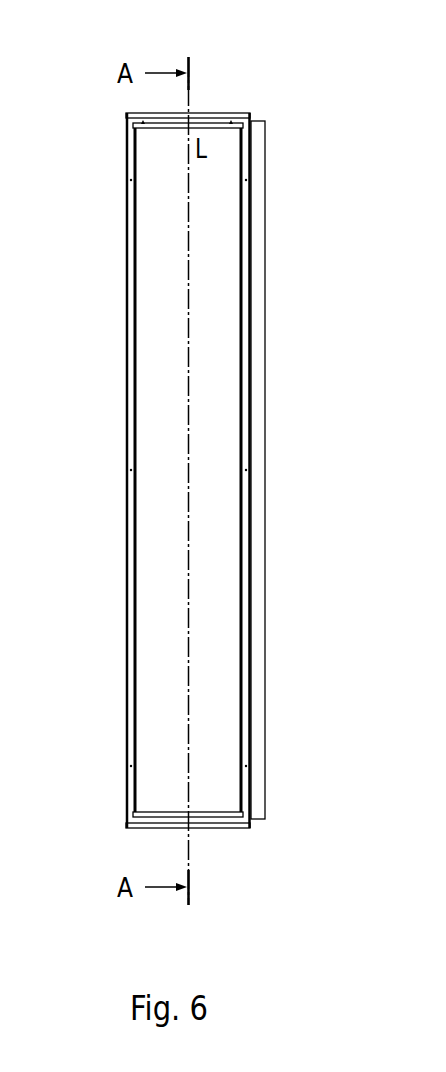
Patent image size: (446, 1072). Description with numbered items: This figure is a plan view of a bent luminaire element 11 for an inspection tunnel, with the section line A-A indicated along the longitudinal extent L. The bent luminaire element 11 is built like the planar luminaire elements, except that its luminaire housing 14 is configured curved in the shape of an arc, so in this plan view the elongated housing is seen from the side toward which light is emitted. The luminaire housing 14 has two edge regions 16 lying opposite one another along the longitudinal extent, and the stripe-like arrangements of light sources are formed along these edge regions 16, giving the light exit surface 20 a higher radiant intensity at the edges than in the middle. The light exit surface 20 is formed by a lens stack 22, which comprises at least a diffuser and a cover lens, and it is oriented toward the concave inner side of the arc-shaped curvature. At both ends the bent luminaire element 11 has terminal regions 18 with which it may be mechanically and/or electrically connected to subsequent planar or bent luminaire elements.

The bent luminaire element 11 is at (300, 100).
The luminaire housing 14 is at (126, 159).
The edge regions 16 is at (126, 499).
The terminal regions 18 is at (222, 108).
The light exit surface 20 is at (212, 340).
The lens stack 22 is at (187, 122).